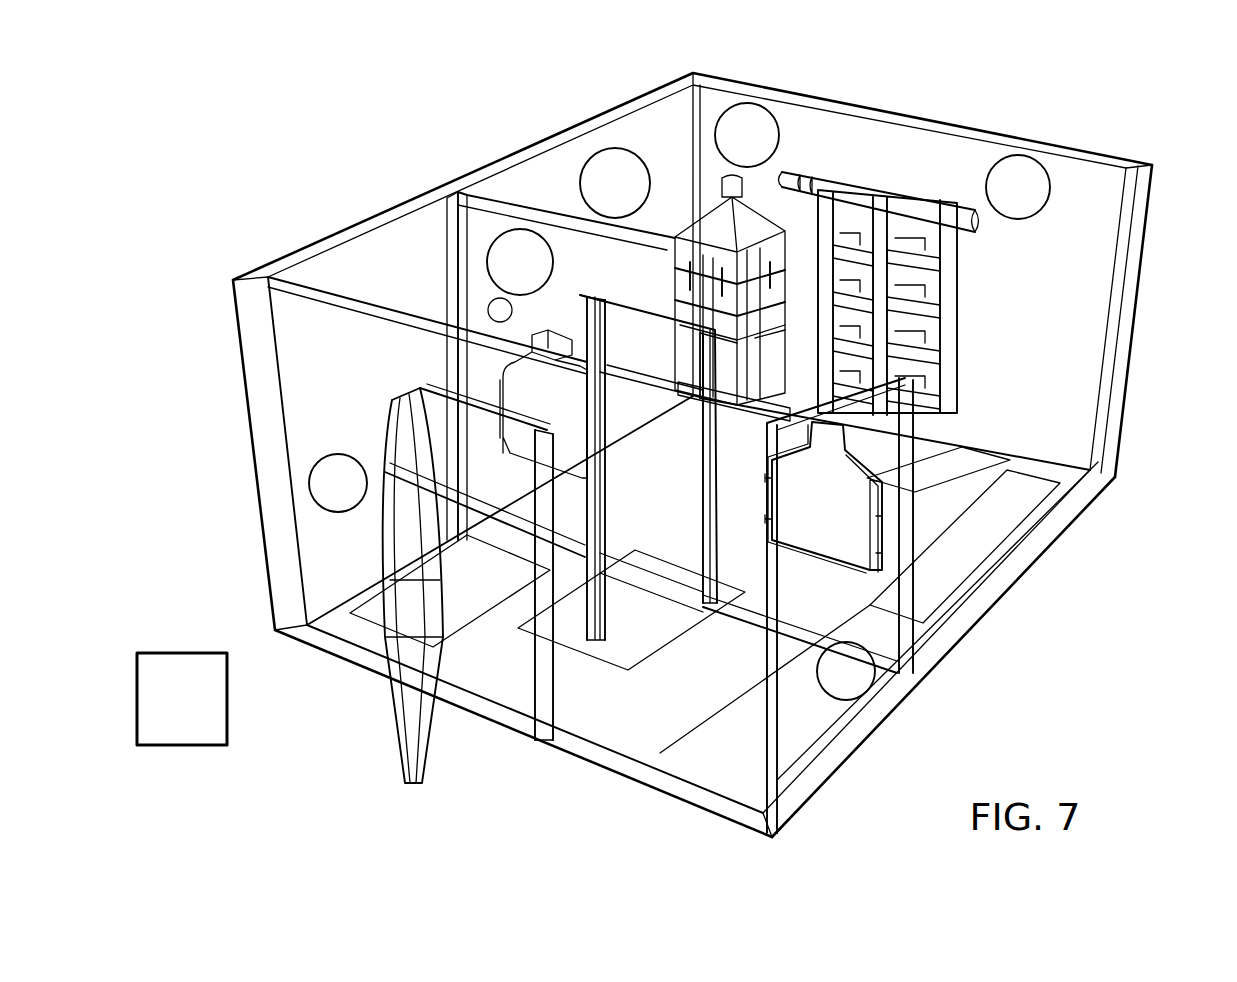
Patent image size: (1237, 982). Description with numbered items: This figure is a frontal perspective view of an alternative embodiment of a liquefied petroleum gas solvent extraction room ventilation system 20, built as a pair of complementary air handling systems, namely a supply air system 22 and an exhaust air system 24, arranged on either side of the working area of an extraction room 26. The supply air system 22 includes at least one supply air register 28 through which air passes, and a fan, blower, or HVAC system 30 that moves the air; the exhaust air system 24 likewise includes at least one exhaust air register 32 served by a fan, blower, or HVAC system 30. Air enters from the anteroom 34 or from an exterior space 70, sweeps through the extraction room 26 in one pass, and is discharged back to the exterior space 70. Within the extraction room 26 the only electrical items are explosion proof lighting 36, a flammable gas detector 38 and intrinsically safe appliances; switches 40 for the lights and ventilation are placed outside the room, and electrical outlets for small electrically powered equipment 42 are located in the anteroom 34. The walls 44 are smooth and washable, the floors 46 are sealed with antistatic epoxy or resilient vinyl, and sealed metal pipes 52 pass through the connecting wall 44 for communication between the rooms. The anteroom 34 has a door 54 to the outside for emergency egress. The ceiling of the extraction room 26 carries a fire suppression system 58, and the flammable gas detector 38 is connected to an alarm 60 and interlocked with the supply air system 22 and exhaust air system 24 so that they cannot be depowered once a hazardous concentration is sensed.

The extraction room ventilation system 20 is at (278, 92).
The supply air system 22 is at (813, 525).
The exhaust air system 24 is at (965, 362).
The extraction room 26 is at (672, 497).
The supply air register 28 is at (802, 516).
The fan, blower, or HVAC system 30 is at (159, 714).
The exhaust air register 32 is at (922, 210).
The anteroom 34 is at (609, 714).
The explosion proof lighting 36 is at (734, 149).
The flammable gas detector 38 is at (1005, 201).
The switches 40 is at (325, 497).
The electrical outlets for small electrically powered equipment 42 is at (833, 685).
The walls 44 is at (1134, 313).
The floors 46 is at (494, 672).
The sealed metal pipes 52 is at (494, 302).
The door 54 is at (408, 705).
The fire suppression system 58 is at (602, 197).
The alarm 60 is at (507, 276).
The exterior space 70 is at (1132, 708).